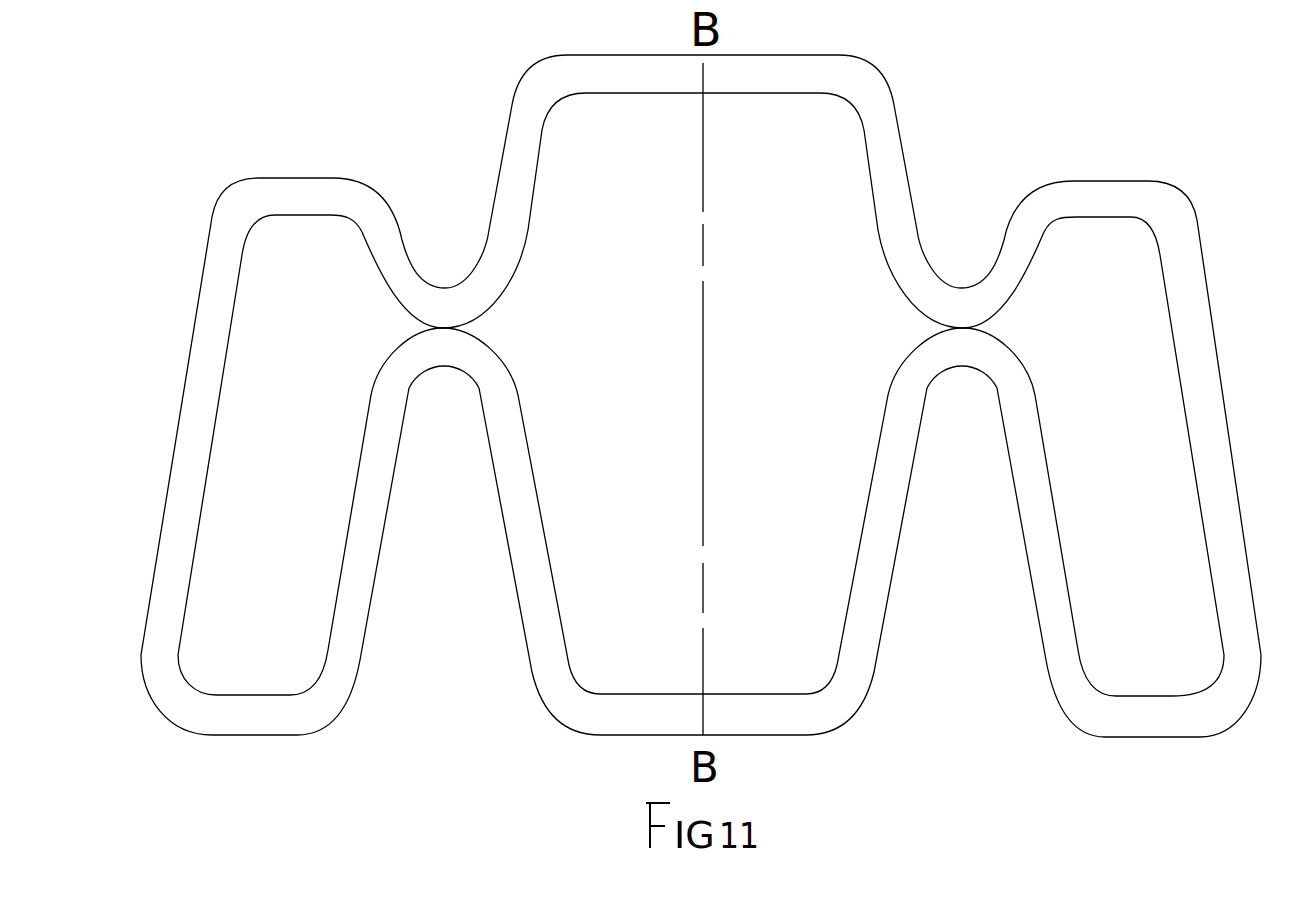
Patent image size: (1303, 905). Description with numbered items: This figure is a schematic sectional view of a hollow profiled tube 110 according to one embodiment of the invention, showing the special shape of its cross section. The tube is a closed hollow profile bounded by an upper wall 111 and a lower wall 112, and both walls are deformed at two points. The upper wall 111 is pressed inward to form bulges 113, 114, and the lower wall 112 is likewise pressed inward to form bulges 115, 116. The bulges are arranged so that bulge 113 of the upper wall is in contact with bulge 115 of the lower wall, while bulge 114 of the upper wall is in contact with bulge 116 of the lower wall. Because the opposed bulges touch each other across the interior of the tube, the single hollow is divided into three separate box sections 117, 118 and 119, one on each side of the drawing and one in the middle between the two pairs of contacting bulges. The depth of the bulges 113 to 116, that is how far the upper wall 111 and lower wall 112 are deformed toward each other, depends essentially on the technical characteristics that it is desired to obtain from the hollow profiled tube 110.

The hollow profiled tube 110 is at (938, 134).
The upper wall 111 is at (748, 64).
The lower wall 112 is at (752, 722).
The bulge 113 is at (437, 300).
The bulge 114 is at (955, 298).
The bulge 115 is at (444, 351).
The bulge 116 is at (953, 353).
The box section 117 is at (243, 466).
The box section 118 is at (703, 414).
The box section 119 is at (1129, 459).